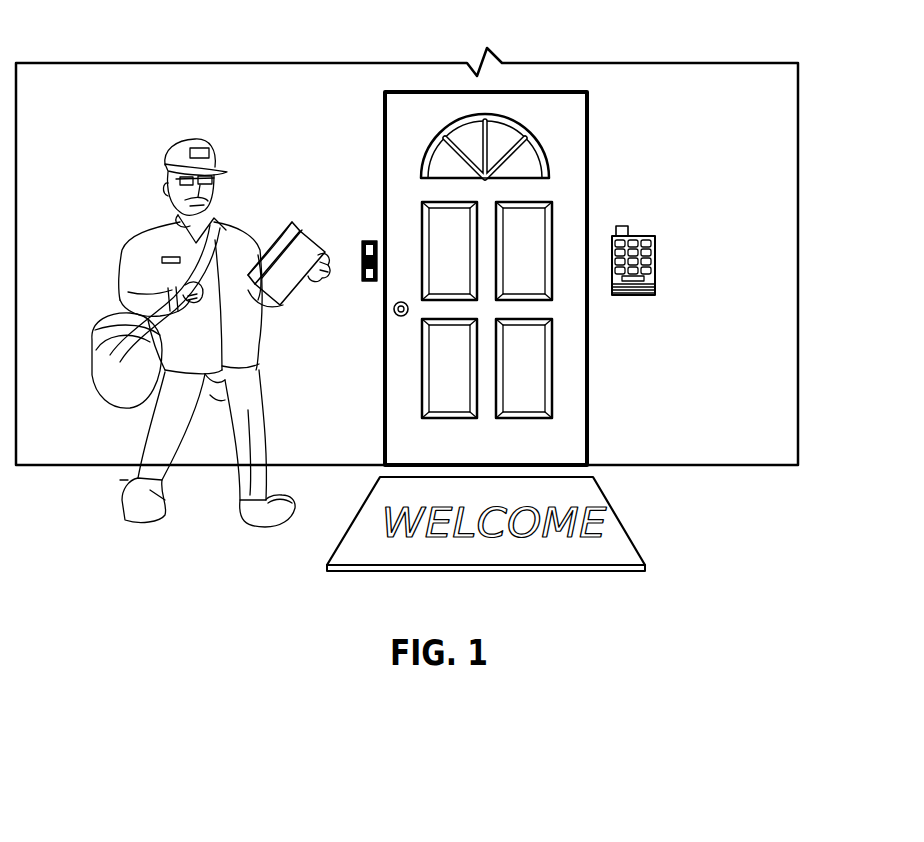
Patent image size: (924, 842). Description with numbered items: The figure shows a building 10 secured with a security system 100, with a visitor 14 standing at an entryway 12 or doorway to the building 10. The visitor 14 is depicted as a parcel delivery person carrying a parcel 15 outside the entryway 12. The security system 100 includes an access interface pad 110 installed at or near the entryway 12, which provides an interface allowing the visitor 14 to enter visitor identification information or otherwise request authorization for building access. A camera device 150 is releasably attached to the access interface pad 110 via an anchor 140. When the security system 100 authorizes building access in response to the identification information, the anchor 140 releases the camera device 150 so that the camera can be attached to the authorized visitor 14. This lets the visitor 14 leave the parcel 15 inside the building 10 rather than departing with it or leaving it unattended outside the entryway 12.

The building 10 is at (808, 360).
The entryway 12 is at (588, 120).
The visitor 14 is at (120, 275).
The parcel 15 is at (283, 232).
The security system 100 is at (691, 241).
The access interface pad 110 is at (630, 297).
The anchor 140 is at (635, 232).
The camera device 150 is at (621, 226).